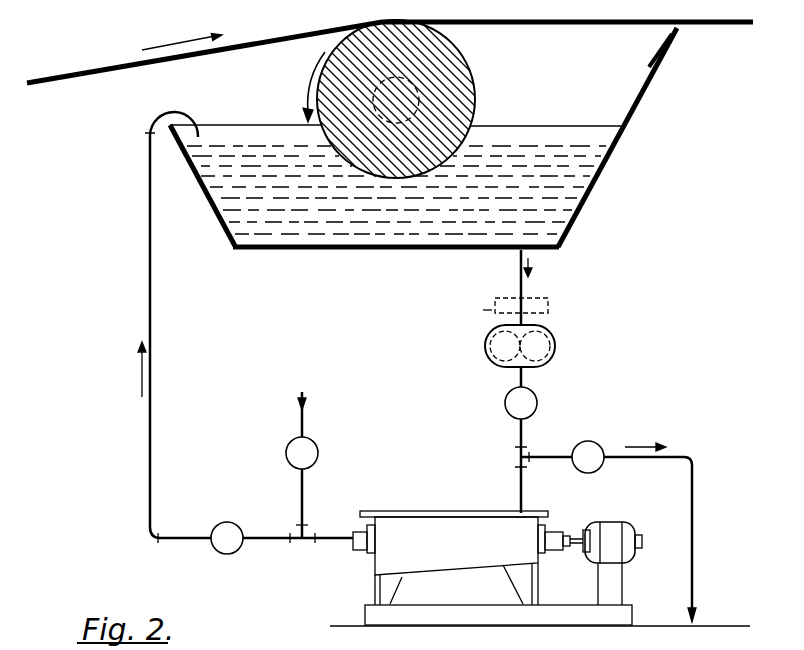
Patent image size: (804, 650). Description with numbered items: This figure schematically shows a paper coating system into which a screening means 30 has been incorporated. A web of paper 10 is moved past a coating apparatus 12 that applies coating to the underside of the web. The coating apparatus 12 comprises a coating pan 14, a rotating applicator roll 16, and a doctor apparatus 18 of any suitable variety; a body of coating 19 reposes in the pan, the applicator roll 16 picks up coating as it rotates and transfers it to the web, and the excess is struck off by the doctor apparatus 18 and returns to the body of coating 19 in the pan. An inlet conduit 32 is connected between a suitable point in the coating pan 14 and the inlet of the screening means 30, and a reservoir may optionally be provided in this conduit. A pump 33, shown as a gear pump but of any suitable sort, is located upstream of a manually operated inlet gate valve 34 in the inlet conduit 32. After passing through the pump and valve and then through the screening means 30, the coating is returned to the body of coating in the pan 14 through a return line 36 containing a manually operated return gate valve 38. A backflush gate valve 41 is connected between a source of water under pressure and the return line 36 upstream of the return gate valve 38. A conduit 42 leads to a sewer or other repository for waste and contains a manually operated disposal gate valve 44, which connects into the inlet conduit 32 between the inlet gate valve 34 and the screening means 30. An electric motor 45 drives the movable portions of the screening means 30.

The web of paper 10 is at (66, 79).
The coating apparatus 12 is at (325, 260).
The coating pan 14 is at (365, 251).
The applicator roll 16 is at (472, 84).
The doctor apparatus 18 is at (655, 57).
The body of coating 19 is at (529, 153).
The screening means 30 is at (442, 553).
The inlet conduit 32 is at (527, 285).
The pump 33 is at (556, 345).
The inlet gate valve 34 is at (537, 399).
The return line 36 is at (155, 388).
The return gate valve 38 is at (223, 522).
The backflush gate valve 41 is at (318, 456).
The conduit 42 is at (696, 510).
The disposal gate valve 44 is at (597, 442).
The electric motor 45 is at (612, 522).